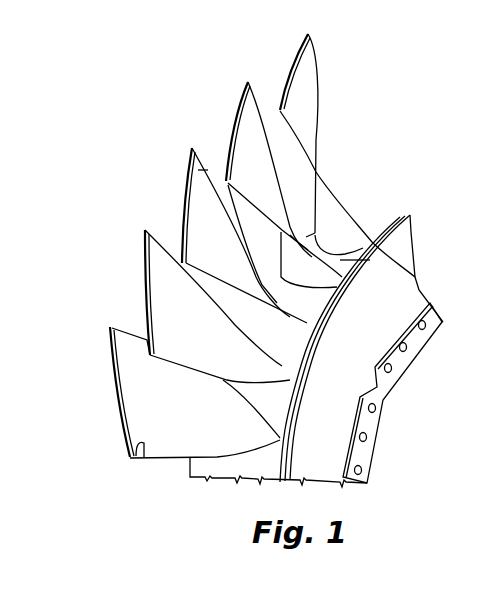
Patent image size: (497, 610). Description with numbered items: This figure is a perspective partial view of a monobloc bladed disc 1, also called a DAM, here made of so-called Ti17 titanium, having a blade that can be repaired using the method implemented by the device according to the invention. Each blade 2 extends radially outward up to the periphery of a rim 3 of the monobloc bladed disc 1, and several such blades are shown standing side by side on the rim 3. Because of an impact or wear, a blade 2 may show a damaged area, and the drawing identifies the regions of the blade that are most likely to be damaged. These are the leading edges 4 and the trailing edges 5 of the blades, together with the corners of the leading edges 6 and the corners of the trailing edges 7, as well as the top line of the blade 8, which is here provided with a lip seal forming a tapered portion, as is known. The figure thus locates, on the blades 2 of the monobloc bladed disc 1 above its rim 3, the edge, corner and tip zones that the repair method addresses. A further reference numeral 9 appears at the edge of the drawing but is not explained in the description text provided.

The monobloc bladed disc 1 is at (122, 222).
The blade 2 is at (140, 375).
The rim 3 is at (415, 277).
The leading edge 4 is at (167, 460).
The trailing edge 5 is at (318, 90).
The corner of leading edge 6 is at (137, 460).
The corner of trailing edge 7 is at (200, 148).
The top line of the blade 8 is at (143, 277).
The mounting flange 9 is at (420, 393).